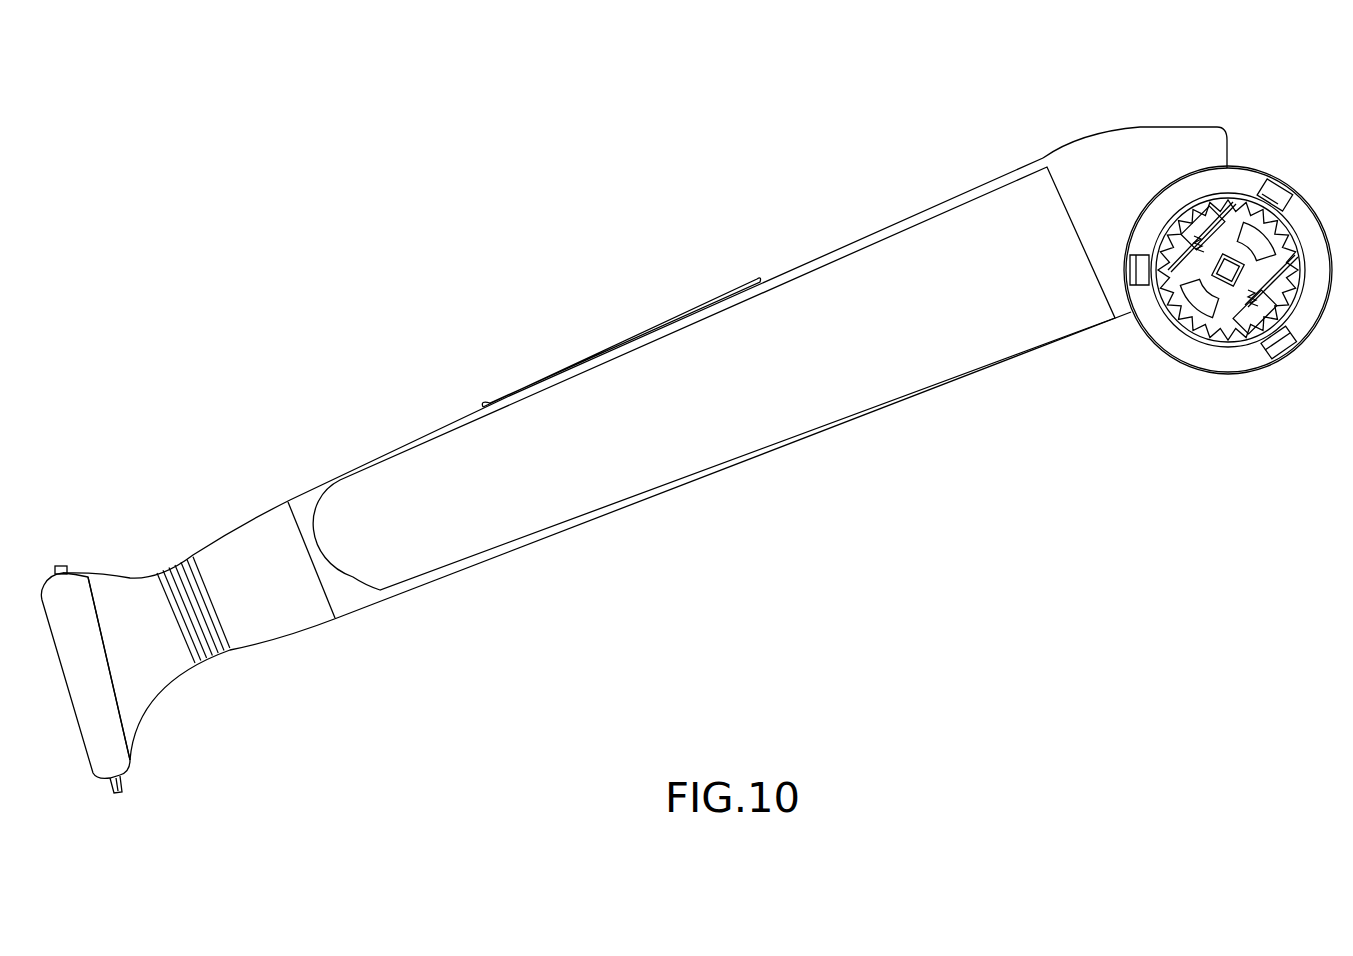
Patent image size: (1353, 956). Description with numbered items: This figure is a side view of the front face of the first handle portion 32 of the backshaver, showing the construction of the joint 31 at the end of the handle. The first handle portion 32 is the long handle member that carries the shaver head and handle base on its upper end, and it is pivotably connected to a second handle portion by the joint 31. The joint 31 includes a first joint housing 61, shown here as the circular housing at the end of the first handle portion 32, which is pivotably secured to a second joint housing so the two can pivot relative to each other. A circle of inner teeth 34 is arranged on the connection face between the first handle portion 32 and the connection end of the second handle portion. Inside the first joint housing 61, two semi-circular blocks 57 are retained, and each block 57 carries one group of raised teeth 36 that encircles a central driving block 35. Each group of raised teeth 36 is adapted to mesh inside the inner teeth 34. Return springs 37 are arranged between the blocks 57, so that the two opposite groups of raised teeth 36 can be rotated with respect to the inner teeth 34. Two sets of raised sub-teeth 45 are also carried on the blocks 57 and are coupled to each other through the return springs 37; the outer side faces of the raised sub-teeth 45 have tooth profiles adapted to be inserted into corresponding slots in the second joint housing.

The joint 31 is at (1313, 163).
The first handle portion 32 is at (833, 282).
The inner teeth 34 is at (1237, 208).
The driving block 35 is at (1223, 288).
The raised teeth 36 is at (1260, 215).
The return springs 37 is at (1200, 236).
The raised sub-teeth 45 is at (1283, 305).
The semi-circular blocks 57 is at (1278, 240).
The first joint housing 61 is at (1323, 303).